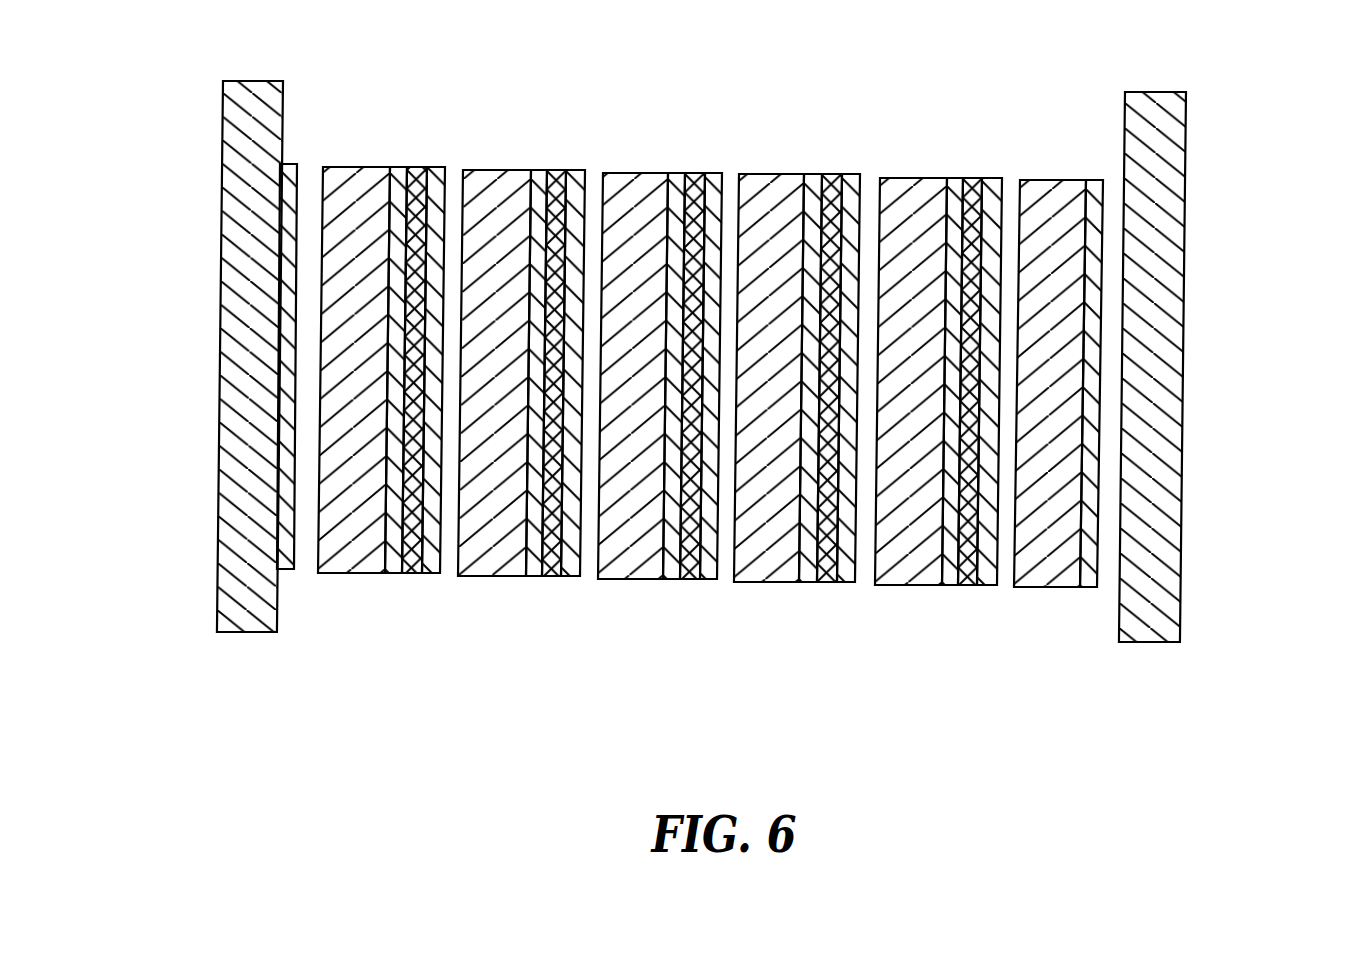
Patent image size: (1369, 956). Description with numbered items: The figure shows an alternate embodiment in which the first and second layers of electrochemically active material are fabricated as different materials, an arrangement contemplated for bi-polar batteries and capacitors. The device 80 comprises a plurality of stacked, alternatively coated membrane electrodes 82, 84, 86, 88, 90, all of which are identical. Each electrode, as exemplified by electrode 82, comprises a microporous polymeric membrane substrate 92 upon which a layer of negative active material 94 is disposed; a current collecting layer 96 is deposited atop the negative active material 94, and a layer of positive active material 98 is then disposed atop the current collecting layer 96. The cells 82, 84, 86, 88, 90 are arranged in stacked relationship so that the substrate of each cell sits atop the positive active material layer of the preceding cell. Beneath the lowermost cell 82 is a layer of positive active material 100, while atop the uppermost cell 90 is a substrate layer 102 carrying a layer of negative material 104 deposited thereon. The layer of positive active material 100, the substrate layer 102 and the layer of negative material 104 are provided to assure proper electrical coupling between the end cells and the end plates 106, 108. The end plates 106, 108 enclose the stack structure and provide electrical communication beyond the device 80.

The device 80 is at (1326, 662).
The coated membrane electrode 82 is at (400, 380).
The coated membrane electrode 84 is at (536, 170).
The coated membrane electrode 86 is at (668, 173).
The coated membrane electrode 88 is at (806, 175).
The coated membrane electrode 90 is at (947, 178).
The microporous polymeric membrane substrate 92 is at (351, 563).
The layer of negative active material 94 is at (392, 573).
The current collecting layer 96 is at (412, 573).
The layer of positive active material 98 is at (433, 573).
The layer of positive active material 100 is at (288, 165).
The substrate layer 102 is at (1031, 462).
The layer of negative material 104 is at (1090, 583).
The end plate 106 is at (237, 620).
The end plate 108 is at (1163, 630).